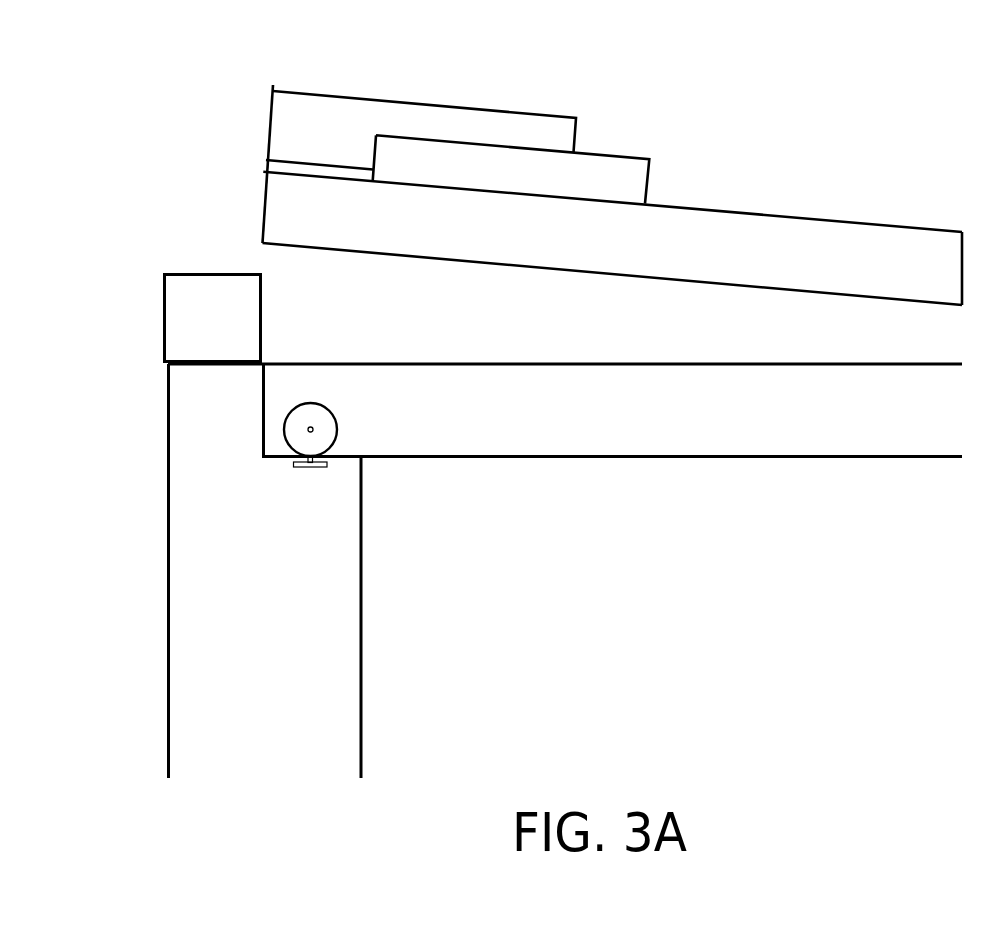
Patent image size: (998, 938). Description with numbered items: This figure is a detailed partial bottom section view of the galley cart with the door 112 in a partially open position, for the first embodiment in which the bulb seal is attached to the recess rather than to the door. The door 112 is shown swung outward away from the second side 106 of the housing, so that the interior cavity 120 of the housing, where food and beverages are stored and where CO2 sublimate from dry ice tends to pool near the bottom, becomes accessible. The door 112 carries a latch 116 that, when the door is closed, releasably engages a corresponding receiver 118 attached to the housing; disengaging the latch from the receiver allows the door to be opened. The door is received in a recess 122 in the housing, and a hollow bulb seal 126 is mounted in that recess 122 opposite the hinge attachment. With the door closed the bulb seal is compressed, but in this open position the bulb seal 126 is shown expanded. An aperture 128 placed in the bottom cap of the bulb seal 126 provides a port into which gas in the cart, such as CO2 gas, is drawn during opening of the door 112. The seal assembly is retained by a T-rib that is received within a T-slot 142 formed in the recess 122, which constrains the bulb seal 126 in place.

The second side 106 is at (232, 642).
The first door 112 is at (730, 238).
The latch 116 is at (393, 117).
The receiver 118 is at (220, 310).
The interior cavity 120 is at (789, 704).
The recess 122 is at (265, 386).
The bulb seal 126 is at (340, 430).
The aperture 128 is at (311, 429).
The T-slot 142 is at (310, 467).